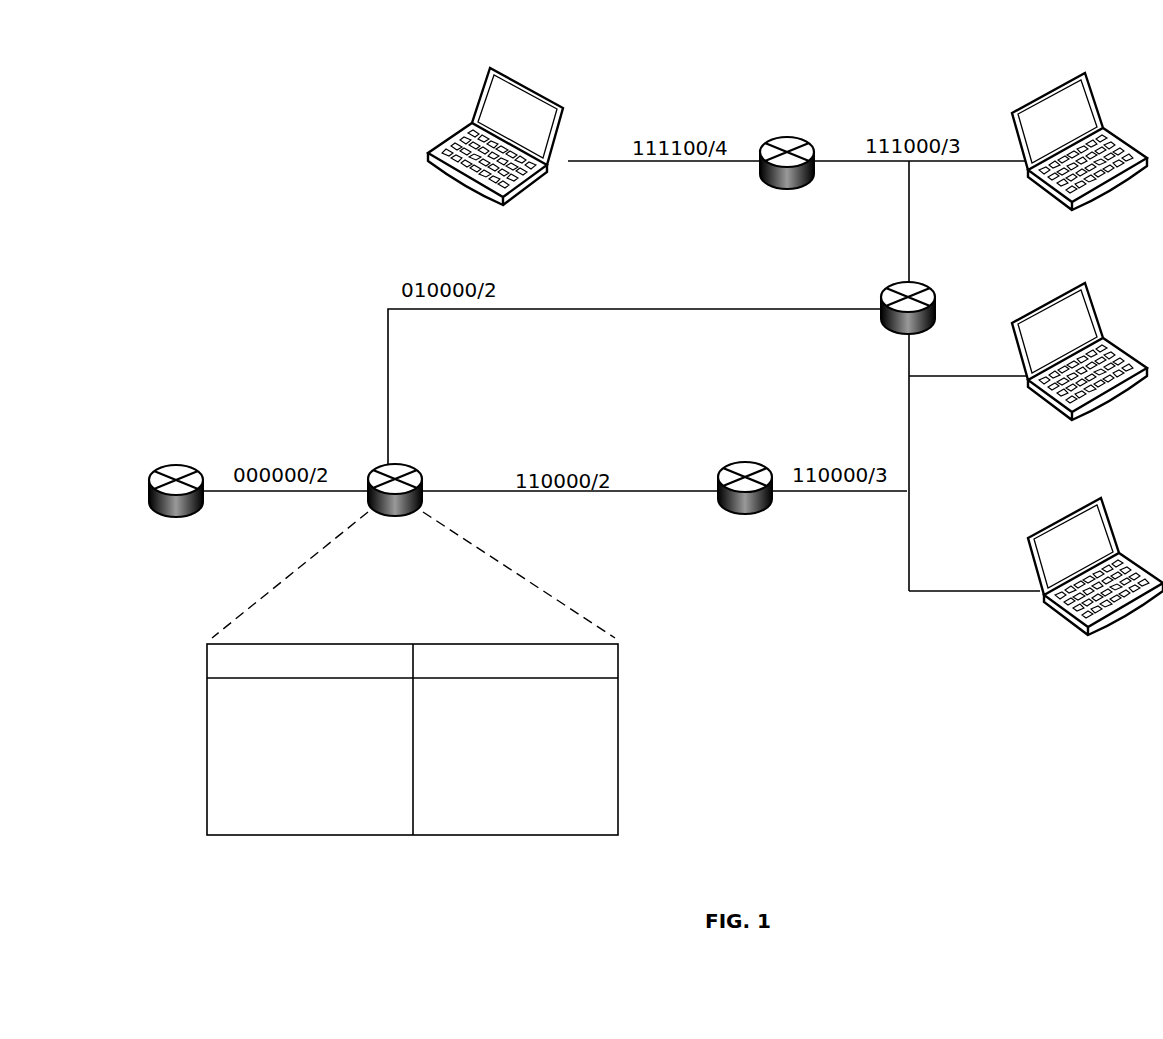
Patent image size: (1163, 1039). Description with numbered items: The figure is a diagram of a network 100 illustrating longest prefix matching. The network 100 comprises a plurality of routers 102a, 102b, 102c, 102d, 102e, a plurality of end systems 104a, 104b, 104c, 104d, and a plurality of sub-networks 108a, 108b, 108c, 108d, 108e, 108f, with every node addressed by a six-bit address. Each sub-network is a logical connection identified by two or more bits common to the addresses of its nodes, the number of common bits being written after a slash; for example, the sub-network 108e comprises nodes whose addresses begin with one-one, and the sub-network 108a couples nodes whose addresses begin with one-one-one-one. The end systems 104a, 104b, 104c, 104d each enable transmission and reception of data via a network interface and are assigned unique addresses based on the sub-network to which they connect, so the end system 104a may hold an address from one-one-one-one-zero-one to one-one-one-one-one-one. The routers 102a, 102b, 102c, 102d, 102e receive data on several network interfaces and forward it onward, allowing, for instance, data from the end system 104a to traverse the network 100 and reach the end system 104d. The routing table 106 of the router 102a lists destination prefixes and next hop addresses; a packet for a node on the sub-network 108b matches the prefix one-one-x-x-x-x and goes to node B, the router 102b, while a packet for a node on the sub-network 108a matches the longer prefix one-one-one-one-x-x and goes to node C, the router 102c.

The network 100 is at (190, 95).
The router 102a is at (382, 468).
The router 102b is at (725, 464).
The router 102c is at (893, 283).
The router 102d is at (163, 468).
The router 102e is at (768, 140).
The end system 104a is at (488, 67).
The end system 104b is at (1028, 101).
The end system 104c is at (1020, 312).
The end system 104d is at (1066, 518).
The routing table 106 is at (207, 726).
The sub-network 108a is at (582, 162).
The sub-network 108b is at (910, 203).
The sub-network 108c is at (592, 310).
The sub-network 108d is at (942, 592).
The sub-network 108e is at (633, 493).
The sub-network 108f is at (233, 492).